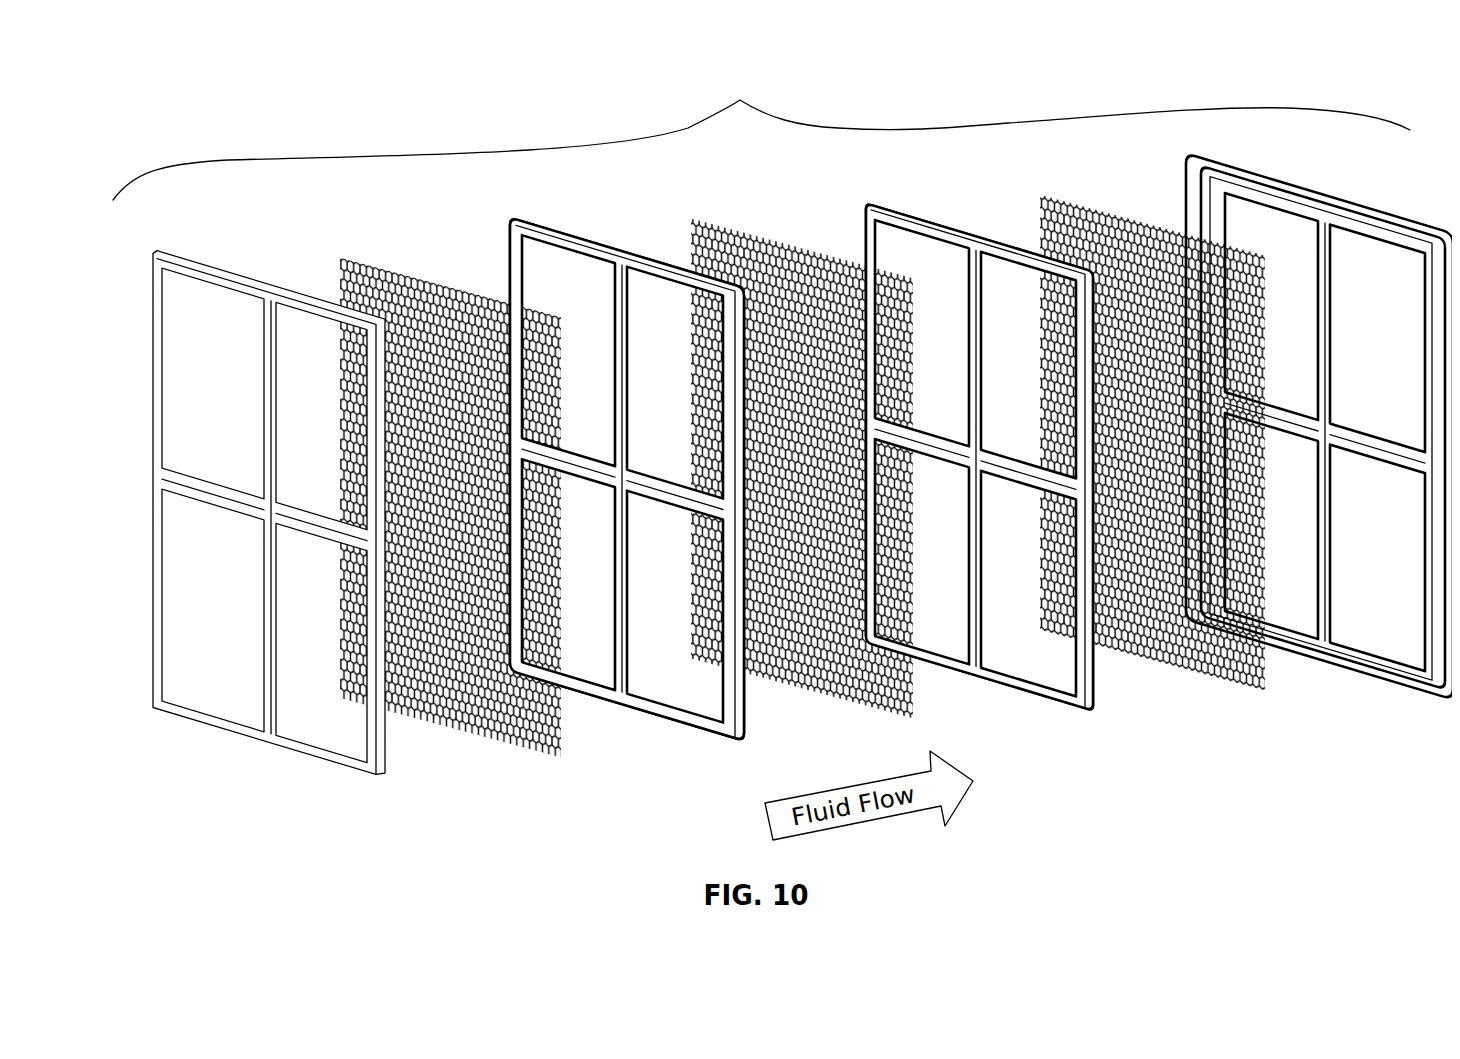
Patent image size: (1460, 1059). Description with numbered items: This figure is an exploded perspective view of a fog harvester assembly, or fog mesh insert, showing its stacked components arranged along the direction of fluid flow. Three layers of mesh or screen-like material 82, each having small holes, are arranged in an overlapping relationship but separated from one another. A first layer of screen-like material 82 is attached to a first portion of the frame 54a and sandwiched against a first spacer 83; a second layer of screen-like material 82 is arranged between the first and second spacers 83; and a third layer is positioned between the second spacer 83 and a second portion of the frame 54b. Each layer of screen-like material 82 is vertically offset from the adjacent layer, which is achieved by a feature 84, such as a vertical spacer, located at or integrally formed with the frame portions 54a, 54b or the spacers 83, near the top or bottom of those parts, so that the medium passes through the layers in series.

The first portion of the frame 54a is at (178, 722).
The second portion of the frame 54b is at (1372, 657).
The screen-like material 82 is at (780, 258).
The spacer 83 is at (933, 220).
The feature 84 is at (570, 245).